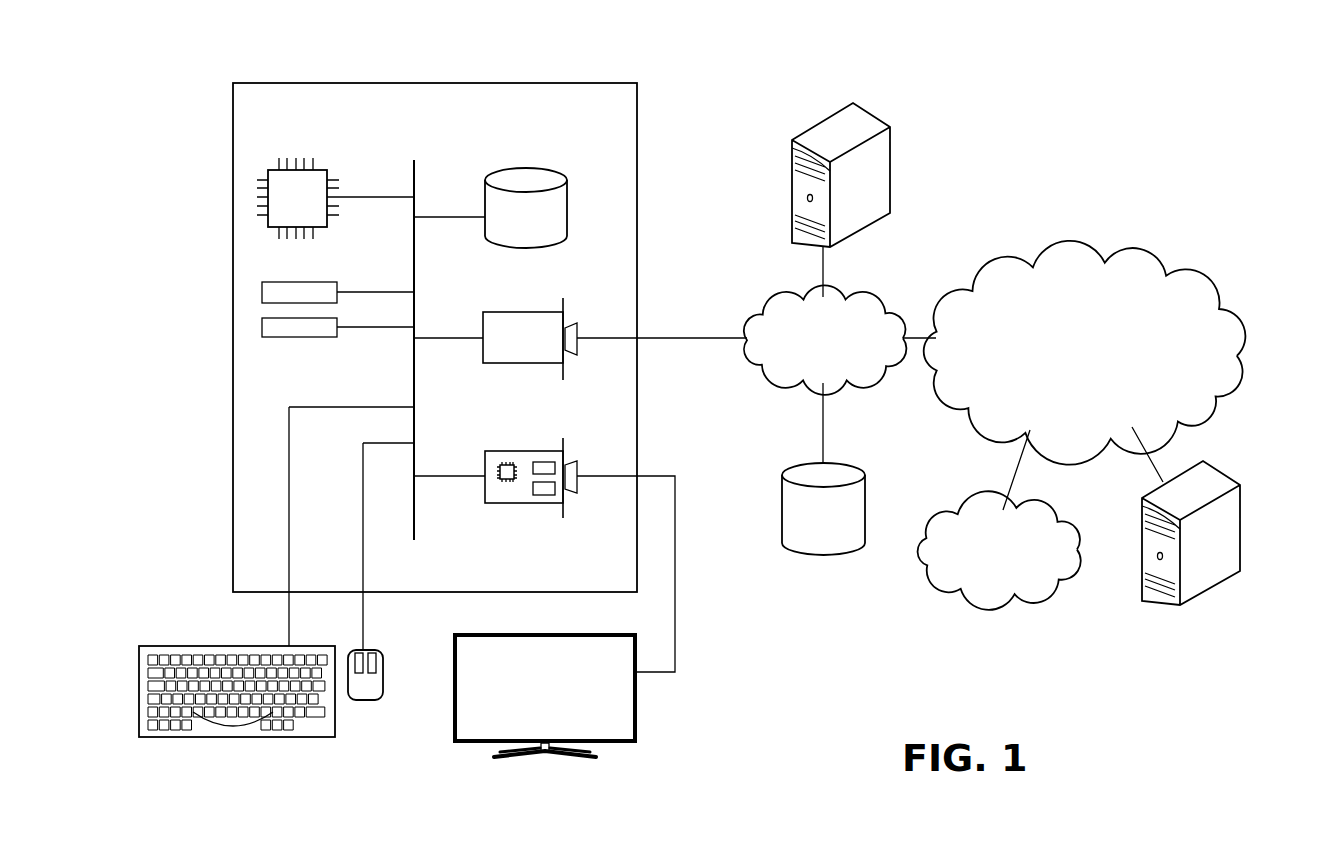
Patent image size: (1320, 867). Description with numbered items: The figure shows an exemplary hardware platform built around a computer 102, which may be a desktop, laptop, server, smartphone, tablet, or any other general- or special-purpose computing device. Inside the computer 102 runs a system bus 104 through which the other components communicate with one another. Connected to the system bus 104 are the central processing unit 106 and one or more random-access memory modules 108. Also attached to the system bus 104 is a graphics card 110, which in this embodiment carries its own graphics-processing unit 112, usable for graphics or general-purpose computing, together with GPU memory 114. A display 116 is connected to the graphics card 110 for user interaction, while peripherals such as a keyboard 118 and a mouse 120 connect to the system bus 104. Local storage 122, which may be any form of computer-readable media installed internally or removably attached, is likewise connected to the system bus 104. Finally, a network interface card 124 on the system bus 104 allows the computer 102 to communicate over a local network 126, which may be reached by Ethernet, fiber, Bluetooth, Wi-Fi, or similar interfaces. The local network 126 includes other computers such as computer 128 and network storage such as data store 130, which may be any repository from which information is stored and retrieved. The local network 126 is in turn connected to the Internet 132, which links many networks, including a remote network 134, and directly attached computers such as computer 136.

The computer 102 is at (596, 83).
The system bus 104 is at (416, 170).
The central processing unit 106 is at (323, 165).
The random-access memory modules 108 is at (340, 327).
The graphics card 110 is at (485, 463).
The graphics-processing unit 112 is at (507, 483).
The GPU memory 114 is at (542, 495).
The display 116 is at (638, 723).
The keyboard 118 is at (240, 737).
The mouse 120 is at (363, 700).
The local storage 122 is at (568, 199).
The network interface card 124 is at (484, 323).
The local network 126 is at (875, 299).
The computer 128 is at (876, 114).
The data store 130 is at (856, 466).
The Internet 132 is at (1130, 265).
The remote network 134 is at (1054, 512).
The computer 136 is at (1218, 472).